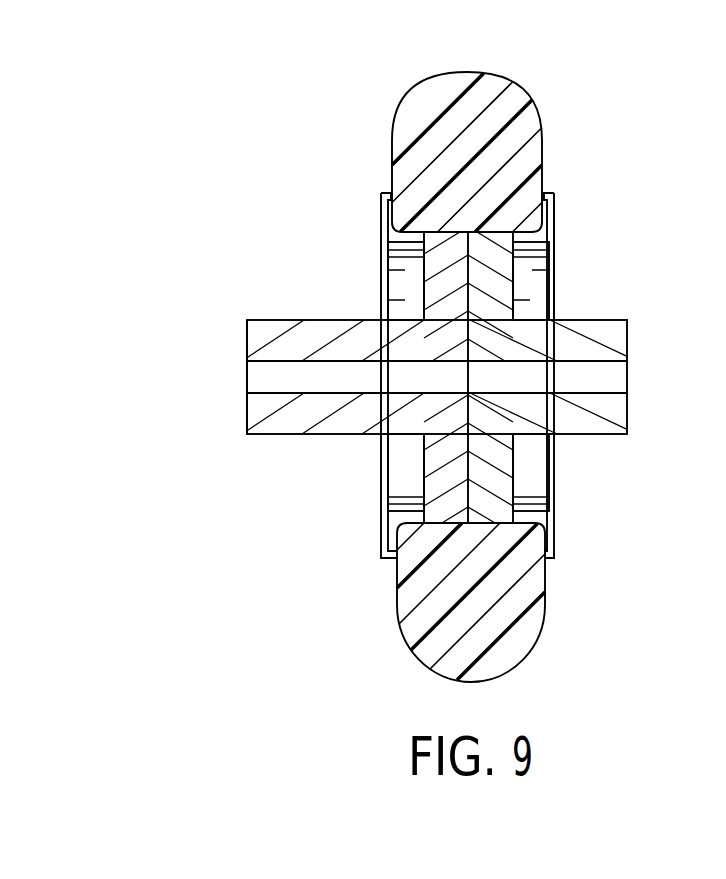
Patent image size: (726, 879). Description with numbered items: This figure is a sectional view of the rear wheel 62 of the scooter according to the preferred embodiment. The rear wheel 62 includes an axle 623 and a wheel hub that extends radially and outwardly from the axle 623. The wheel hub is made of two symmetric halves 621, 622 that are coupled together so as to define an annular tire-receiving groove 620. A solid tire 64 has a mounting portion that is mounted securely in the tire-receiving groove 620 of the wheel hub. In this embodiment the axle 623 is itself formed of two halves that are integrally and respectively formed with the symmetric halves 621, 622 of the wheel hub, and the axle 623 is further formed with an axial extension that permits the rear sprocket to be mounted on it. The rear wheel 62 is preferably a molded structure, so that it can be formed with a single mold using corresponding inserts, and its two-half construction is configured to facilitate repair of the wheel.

The rear wheel 62 is at (555, 263).
The solid tire 64 is at (437, 130).
The tire-receiving groove 620 is at (545, 193).
The symmetric half of wheel hub 621 is at (443, 473).
The symmetric half of wheel hub 622 is at (508, 480).
The axle 623 is at (602, 327).